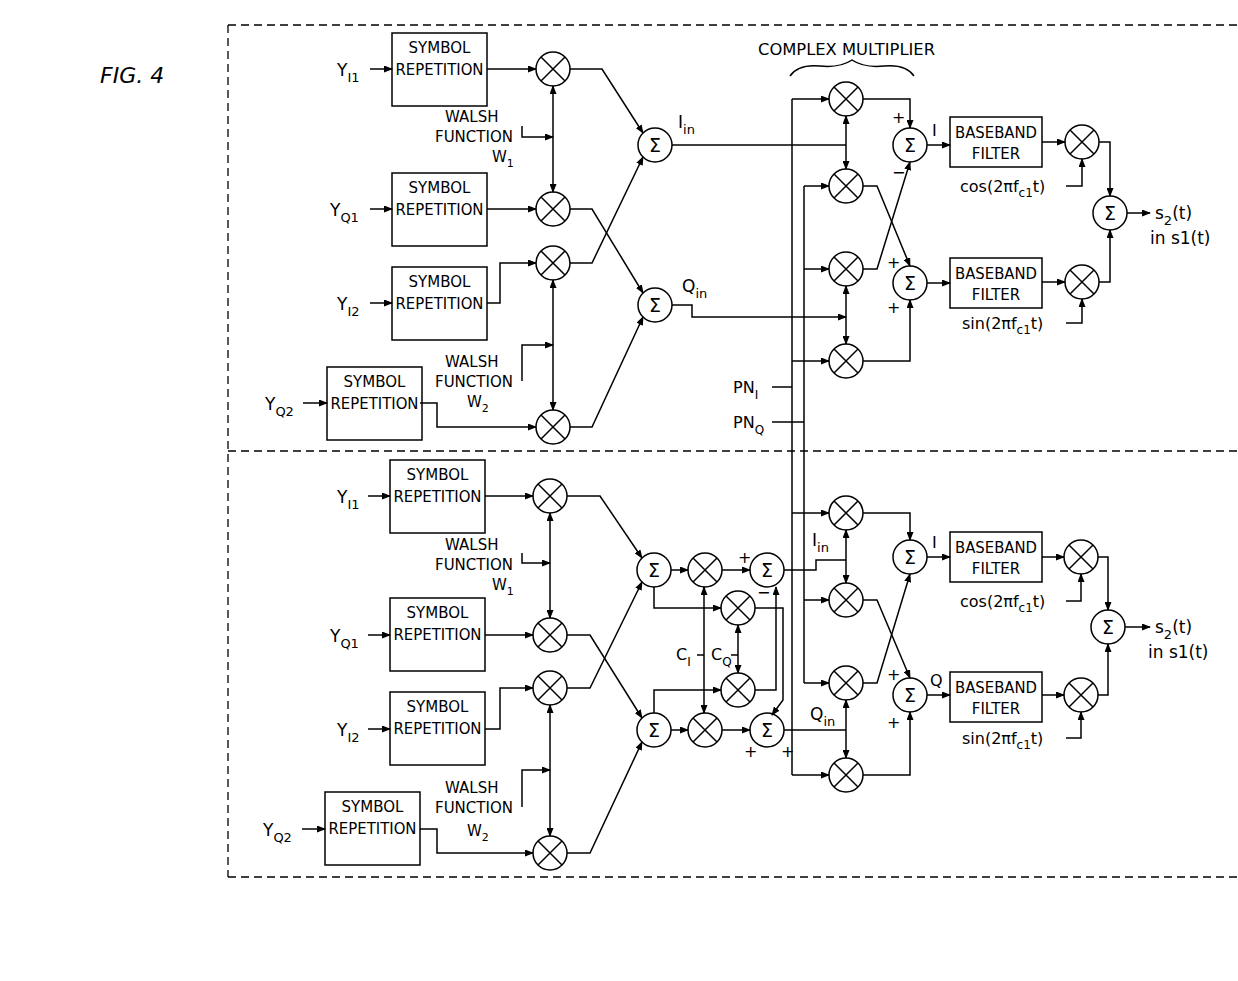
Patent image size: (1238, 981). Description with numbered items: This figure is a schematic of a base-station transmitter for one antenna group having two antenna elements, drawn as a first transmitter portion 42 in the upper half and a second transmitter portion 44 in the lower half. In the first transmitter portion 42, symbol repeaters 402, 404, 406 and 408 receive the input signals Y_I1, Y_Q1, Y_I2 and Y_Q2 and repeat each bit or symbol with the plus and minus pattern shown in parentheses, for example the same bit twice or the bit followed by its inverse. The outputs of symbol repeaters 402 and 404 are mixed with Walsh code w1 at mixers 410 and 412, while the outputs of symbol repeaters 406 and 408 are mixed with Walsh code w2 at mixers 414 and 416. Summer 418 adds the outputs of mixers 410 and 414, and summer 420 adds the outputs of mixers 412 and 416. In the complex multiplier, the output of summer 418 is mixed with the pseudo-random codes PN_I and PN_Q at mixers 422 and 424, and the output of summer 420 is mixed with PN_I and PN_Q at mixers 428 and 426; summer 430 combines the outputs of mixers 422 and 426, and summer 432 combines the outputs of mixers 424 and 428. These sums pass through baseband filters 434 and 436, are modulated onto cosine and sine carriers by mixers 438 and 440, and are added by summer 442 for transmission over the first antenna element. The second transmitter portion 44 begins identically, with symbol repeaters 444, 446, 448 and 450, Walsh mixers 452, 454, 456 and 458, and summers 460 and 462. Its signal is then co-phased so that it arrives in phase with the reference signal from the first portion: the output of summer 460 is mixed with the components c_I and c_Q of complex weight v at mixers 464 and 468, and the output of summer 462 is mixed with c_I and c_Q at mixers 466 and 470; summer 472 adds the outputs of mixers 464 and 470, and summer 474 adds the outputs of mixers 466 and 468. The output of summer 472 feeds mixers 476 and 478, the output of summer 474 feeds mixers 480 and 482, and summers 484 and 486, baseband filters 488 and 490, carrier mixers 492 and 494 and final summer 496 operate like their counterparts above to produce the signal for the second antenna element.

The first transmitter portion 42 is at (195, 243).
The second transmitter portion 44 is at (195, 670).
The symbol repeater 402 is at (390, 102).
The symbol repeater 404 is at (390, 241).
The symbol repeater 406 is at (390, 334).
The symbol repeater 408 is at (326, 369).
The mixer 410 is at (568, 61).
The mixer 412 is at (568, 198).
The mixer 414 is at (567, 281).
The mixer 416 is at (568, 409).
The summer 418 is at (660, 126).
The summer 420 is at (658, 324).
The mixer 422 is at (828, 108).
The mixer 424 is at (838, 204).
The mixer 426 is at (857, 253).
The mixer 428 is at (841, 379).
The summer 430 is at (920, 126).
The summer 432 is at (920, 265).
The baseband filter 434 is at (996, 116).
The baseband filter 436 is at (996, 257).
The mixer 438 is at (1094, 124).
The mixer 440 is at (1098, 300).
The summer 442 is at (1120, 195).
The symbol repeater 444 is at (388, 511).
The symbol repeater 446 is at (388, 668).
The symbol repeater 448 is at (388, 761).
The symbol repeater 450 is at (324, 796).
The mixer 452 is at (565, 488).
The mixer 454 is at (566, 617).
The mixer 456 is at (566, 706).
The mixer 458 is at (566, 835).
The summer 460 is at (657, 552).
The summer 462 is at (656, 748).
The mixer 464 is at (708, 552).
The mixer 466 is at (707, 748).
The mixer 468 is at (722, 615).
The mixer 470 is at (752, 674).
The summer 472 is at (770, 552).
The summer 474 is at (769, 748).
The mixer 476 is at (853, 498).
The mixer 478 is at (838, 618).
The mixer 480 is at (857, 666).
The mixer 482 is at (840, 793).
The summer 484 is at (920, 539).
The summer 486 is at (920, 677).
The baseband filter 488 is at (995, 531).
The baseband filter 490 is at (995, 671).
The mixer 492 is at (1093, 539).
The mixer 494 is at (1097, 713).
The summer 496 is at (1118, 609).